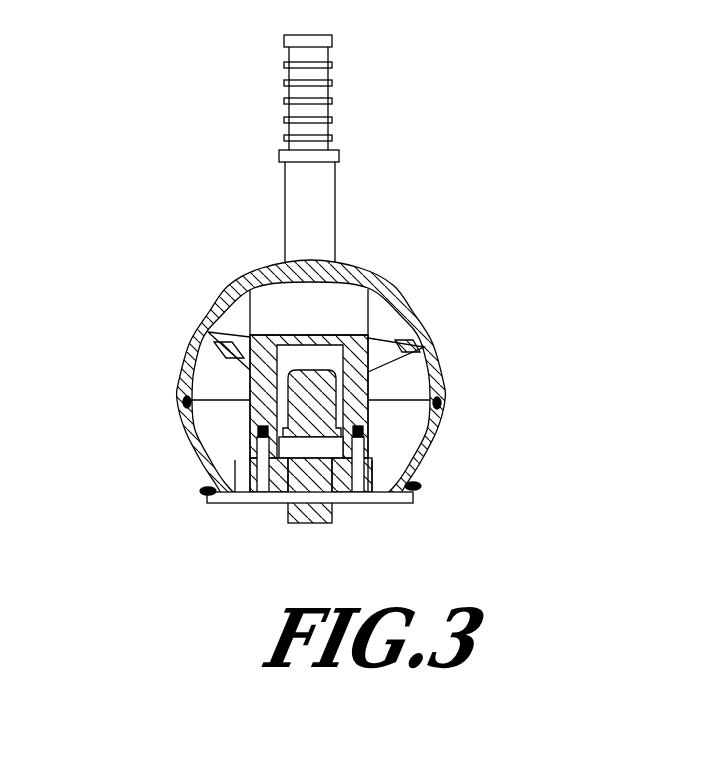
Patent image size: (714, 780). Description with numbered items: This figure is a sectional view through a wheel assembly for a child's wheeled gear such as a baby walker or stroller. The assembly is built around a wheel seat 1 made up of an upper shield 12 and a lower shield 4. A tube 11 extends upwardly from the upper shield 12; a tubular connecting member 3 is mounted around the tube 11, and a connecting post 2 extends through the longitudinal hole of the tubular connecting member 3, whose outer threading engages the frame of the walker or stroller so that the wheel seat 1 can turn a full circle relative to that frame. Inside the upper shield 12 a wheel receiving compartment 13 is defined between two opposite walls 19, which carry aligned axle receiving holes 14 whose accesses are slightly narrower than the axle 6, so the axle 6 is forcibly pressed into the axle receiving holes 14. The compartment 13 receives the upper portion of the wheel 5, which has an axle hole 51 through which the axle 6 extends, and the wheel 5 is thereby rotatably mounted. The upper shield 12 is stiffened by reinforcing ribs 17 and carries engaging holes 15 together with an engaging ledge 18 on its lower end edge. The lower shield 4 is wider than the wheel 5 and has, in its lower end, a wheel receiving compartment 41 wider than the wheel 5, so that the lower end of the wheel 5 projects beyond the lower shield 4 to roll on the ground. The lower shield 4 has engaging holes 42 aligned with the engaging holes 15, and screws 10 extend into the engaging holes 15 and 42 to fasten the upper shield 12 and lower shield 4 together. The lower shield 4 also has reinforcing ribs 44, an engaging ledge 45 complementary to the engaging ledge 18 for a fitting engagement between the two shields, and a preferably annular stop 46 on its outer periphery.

The wheel seat 1 is at (408, 240).
The connecting post 2 is at (327, 42).
The tubular connecting member 3 is at (318, 128).
The lower shield 4 is at (437, 438).
The wheel 5 is at (322, 512).
The axle 6 is at (208, 495).
The screws 10 is at (250, 502).
The tube 11 is at (320, 183).
The upper shield 12 is at (227, 288).
The wheel receiving compartment 13 is at (358, 345).
The axle receiving holes 14 is at (280, 440).
The engaging holes 15 is at (368, 403).
The reinforcing ribs 17 is at (222, 350).
The engaging ledge 18 is at (433, 397).
The walls 19 is at (260, 397).
The wheel receiving compartment 41 is at (360, 502).
The engaging holes 42 is at (420, 480).
The reinforcing ribs 44 is at (258, 428).
The engaging ledge 45 is at (443, 403).
The stop 46 is at (417, 478).
The axle hole 51 is at (284, 483).